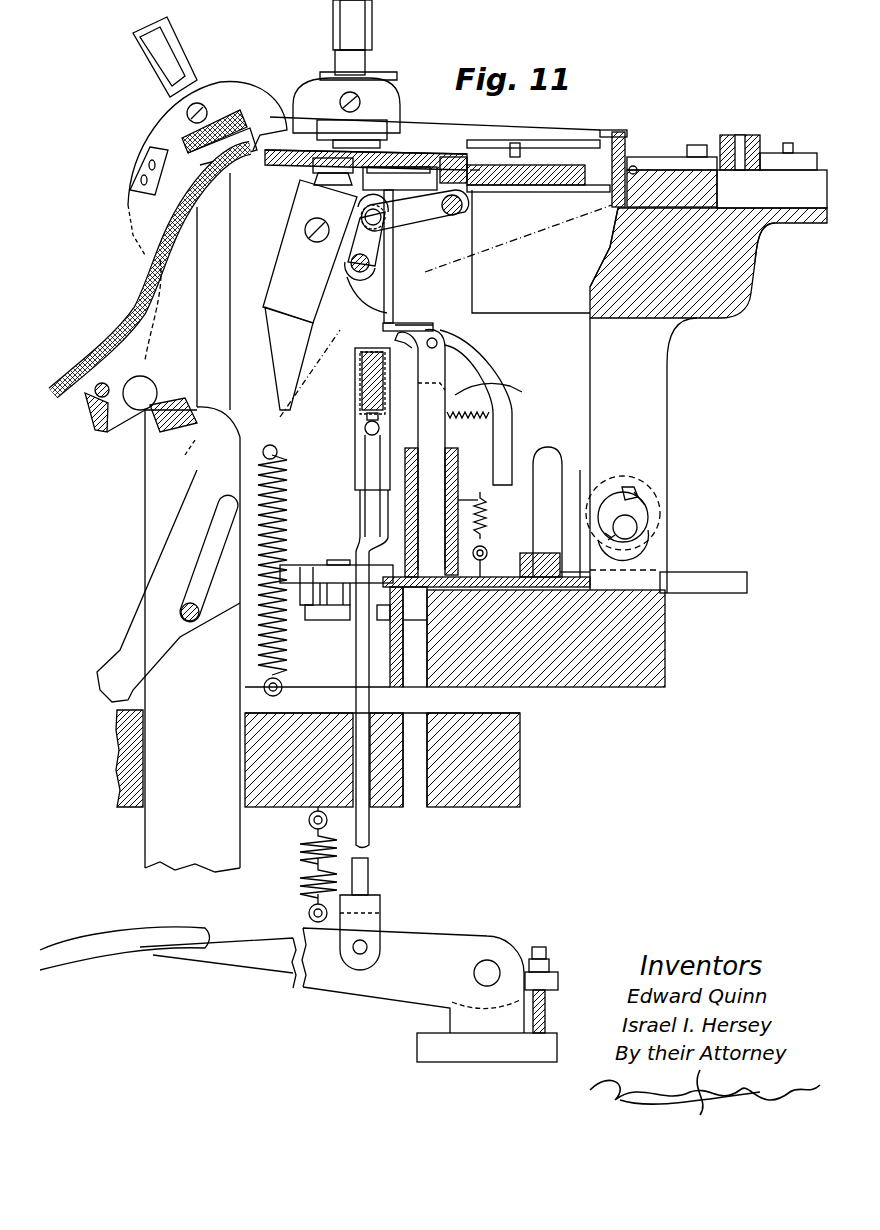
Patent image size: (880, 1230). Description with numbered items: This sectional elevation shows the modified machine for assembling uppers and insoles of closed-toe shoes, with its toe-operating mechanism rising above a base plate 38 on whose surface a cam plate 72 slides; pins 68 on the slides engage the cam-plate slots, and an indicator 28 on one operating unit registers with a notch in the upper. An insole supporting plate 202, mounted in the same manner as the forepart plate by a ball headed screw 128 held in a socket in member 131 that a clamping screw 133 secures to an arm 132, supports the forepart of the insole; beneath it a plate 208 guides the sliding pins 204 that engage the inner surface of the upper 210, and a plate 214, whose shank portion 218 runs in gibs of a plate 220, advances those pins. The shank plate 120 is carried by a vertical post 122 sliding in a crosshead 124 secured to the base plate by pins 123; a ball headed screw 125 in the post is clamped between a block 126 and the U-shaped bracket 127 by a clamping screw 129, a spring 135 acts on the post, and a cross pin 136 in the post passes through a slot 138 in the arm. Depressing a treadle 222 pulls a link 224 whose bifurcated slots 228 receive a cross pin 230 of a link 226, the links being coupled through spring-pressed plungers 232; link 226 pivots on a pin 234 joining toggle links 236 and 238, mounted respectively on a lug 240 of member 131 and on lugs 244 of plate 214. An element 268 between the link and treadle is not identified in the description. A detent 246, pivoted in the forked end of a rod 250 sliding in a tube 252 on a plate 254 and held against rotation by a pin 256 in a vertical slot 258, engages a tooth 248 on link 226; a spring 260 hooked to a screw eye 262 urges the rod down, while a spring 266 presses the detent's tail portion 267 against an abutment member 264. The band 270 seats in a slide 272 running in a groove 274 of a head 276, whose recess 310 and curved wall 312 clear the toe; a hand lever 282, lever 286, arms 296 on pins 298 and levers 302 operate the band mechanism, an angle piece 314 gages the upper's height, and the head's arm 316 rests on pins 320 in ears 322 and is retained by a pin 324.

The pin 68 is at (303, 63).
The indicator 28 is at (147, 170).
The shank plate 120 is at (143, 300).
The vertical post 122 is at (150, 490).
The pin 123 is at (425, 660).
The crosshead 124 is at (118, 735).
The ball headed screw 125 is at (132, 412).
The block 126 is at (108, 408).
The U-shaped bracket 127 is at (100, 430).
The ball headed screw 128 is at (312, 172).
The headed clamping screw 129 is at (100, 384).
The member 131 is at (282, 290).
The arm 132 is at (250, 430).
The clamping screw 133 is at (305, 230).
The spring 135 is at (282, 650).
The cross pin 136 is at (190, 620).
The slot 138 is at (185, 575).
The plate 202 is at (417, 158).
The sliding pin 204 is at (560, 165).
The plate 208 is at (545, 192).
The upper 210 is at (577, 127).
The plate 214 is at (482, 185).
The shank portion 218 is at (400, 150).
The plate 220 is at (400, 182).
The treadle 222 is at (233, 965).
The link 224 is at (370, 832).
The link 226 is at (393, 292).
The slot 228 is at (378, 500).
The cross pin 230 is at (369, 432).
The spring-pressed plunger 232 is at (368, 418).
The pin 234 is at (378, 228).
The toggle link 236 is at (374, 268).
The toggle link 238 is at (418, 217).
The lug 240 is at (362, 298).
The lug 244 is at (443, 176).
The detent 246 is at (457, 365).
The tooth 248 is at (400, 325).
The rod 250 is at (442, 398).
The tube 252 is at (472, 419).
The plate 254 is at (342, 610).
The pin 256 is at (452, 497).
The vertical slot 258 is at (452, 475).
The spring 260 is at (487, 512).
The screw eye 262 is at (487, 553).
The abutment member 264 is at (568, 492).
The spring 266 is at (490, 388).
The tail portion 267 is at (525, 468).
The spring 268 is at (305, 853).
The band 270 is at (612, 220).
The slide 272 is at (670, 185).
The groove 274 is at (762, 225).
The head 276 is at (735, 305).
The hand lever 282 is at (737, 133).
The lever 286 is at (775, 153).
The arm 296 is at (652, 163).
The pin 298 is at (697, 145).
The lever 302 is at (532, 142).
The recess 310 is at (503, 308).
The wall 312 is at (590, 278).
The angle piece 314 is at (613, 160).
The arm 316 is at (655, 372).
The pin 320 is at (640, 520).
The ear 322 is at (655, 555).
The pin 324 is at (650, 487).
The base plate 38 is at (610, 690).
The cam plate 72 is at (712, 578).